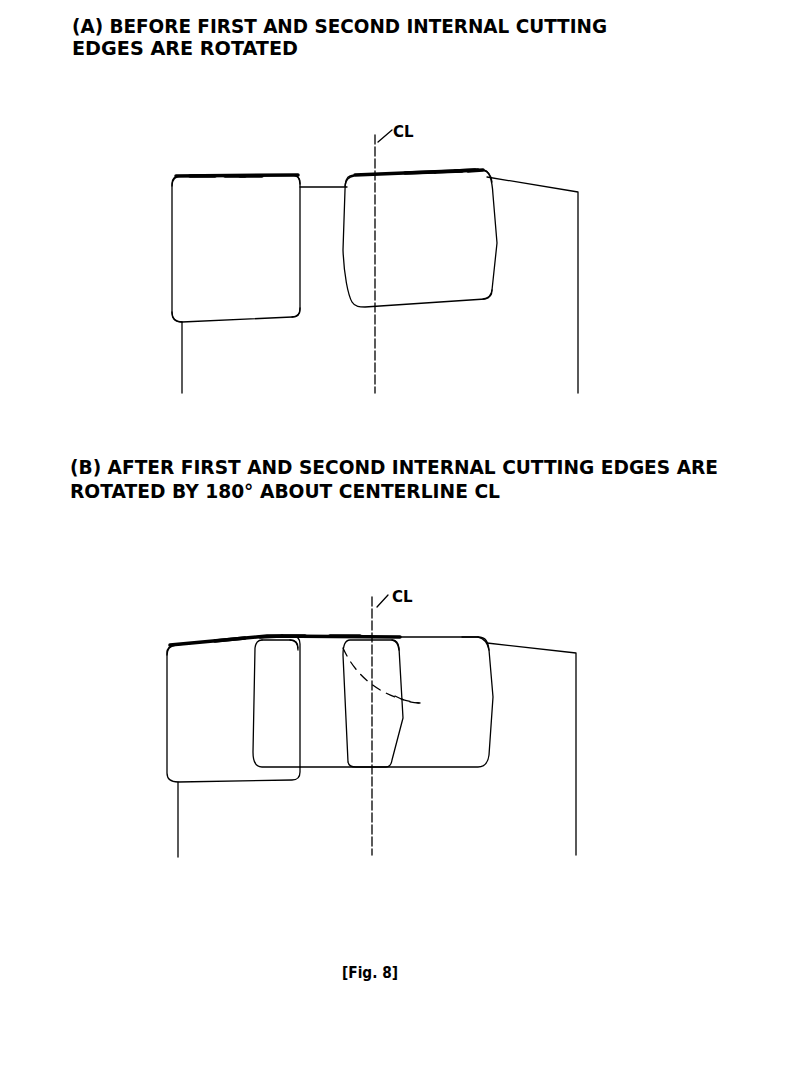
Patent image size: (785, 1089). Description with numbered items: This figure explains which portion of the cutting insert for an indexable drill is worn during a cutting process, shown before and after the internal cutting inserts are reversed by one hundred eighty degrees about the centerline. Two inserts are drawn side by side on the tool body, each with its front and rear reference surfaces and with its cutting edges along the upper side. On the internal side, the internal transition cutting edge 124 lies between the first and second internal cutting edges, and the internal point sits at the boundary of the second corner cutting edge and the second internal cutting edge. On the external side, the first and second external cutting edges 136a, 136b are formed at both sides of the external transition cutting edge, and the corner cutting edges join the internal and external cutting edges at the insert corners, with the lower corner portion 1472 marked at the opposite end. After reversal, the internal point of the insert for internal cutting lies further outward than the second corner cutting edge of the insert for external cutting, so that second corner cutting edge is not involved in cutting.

The internal transition cutting edge 124 is at (450, 168).
The first external cutting edge 136a is at (205, 174).
The second external cutting edge 136b is at (248, 173).
The lower corner portion 1472 is at (173, 315).